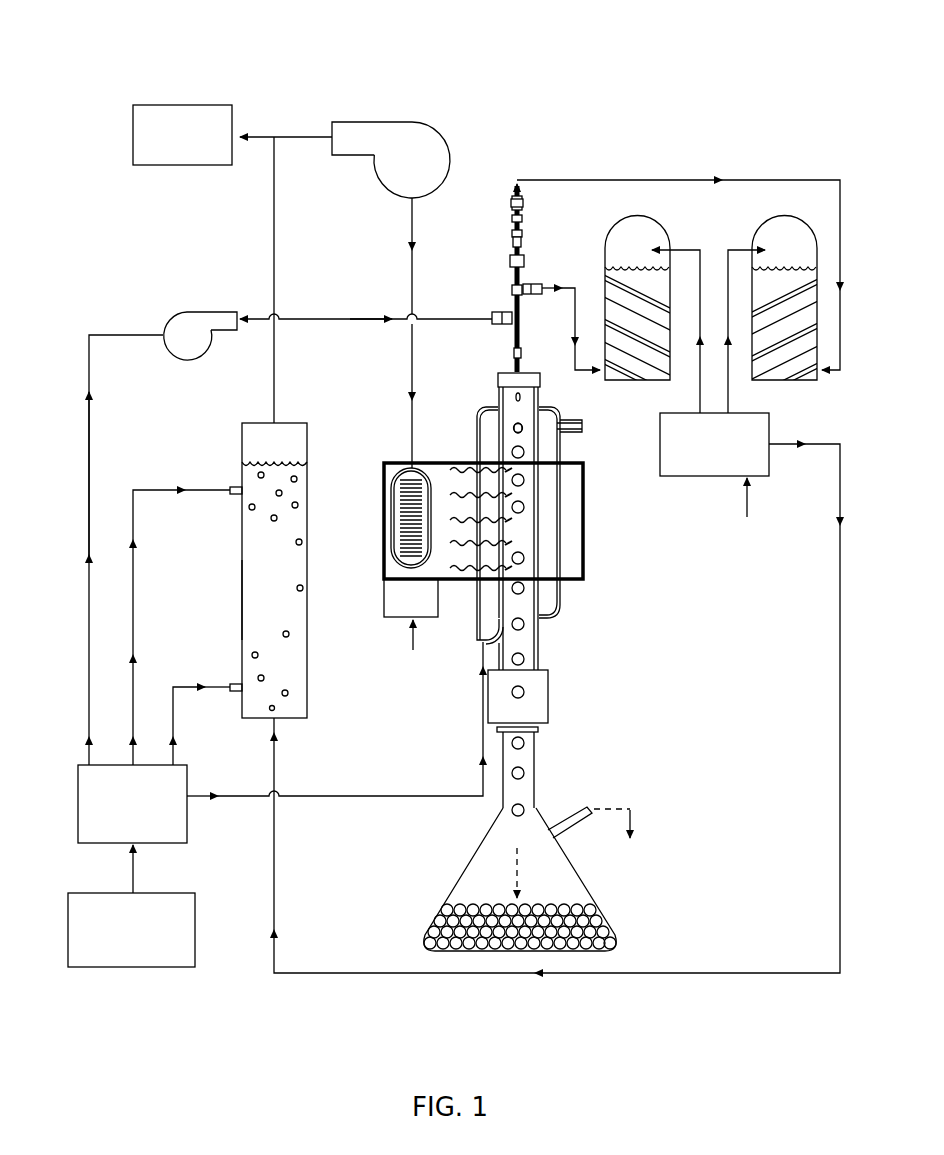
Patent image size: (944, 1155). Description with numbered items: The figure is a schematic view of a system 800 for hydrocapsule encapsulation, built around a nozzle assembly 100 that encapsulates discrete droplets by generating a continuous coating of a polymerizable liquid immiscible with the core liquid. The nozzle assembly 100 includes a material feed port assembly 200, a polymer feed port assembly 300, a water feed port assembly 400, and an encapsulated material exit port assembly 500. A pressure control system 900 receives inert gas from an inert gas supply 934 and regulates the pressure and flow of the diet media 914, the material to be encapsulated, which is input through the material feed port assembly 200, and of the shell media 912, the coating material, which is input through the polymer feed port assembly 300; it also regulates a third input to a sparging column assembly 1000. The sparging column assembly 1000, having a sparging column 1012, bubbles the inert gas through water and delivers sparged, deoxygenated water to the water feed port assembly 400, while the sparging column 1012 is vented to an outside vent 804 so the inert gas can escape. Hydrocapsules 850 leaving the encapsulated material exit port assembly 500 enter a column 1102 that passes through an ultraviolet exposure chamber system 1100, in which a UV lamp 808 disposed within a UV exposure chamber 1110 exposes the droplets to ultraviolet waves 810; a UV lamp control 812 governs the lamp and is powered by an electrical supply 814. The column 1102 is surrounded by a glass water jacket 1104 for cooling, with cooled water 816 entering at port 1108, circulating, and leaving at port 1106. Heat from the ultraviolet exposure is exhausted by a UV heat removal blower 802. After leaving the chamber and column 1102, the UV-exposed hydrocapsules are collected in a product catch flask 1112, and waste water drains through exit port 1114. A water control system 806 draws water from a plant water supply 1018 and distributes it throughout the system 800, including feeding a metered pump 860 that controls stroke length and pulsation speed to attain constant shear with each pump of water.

The system for hydrocapsule encapsulation 800 is at (311, 46).
The UV heat removal blower 802 is at (423, 122).
The outside vent 804 is at (168, 105).
The water control system 806 is at (86, 765).
The UV lamp 808 is at (402, 468).
The ultraviolet light waves 810 is at (467, 487).
The UV lamp control 812 is at (384, 597).
The electrical supply 814 is at (413, 643).
The cooled water 816 is at (418, 796).
The hydrocapsules 850 is at (521, 426).
The metered pump 860 is at (175, 313).
The pressure control system 900 is at (714, 444).
The shell media 912 is at (640, 312).
The diet media 914 is at (790, 312).
The inert gas supply 934 is at (746, 492).
The sparging column assembly 1000 is at (231, 463).
The sparging column 1012 is at (242, 595).
The plant water supply 1018 is at (114, 893).
The nozzle assembly 100 is at (502, 292).
The material feed port assembly 200 is at (524, 203).
The polymer feed port assembly 300 is at (541, 285).
The water feed port assembly 400 is at (494, 313).
The encapsulated material exit port assembly 500 is at (512, 371).
The ultraviolet exposure chamber system 1100 is at (569, 595).
The column 1102 is at (539, 636).
The water jacket 1104 is at (486, 406).
The exit port 1106 is at (583, 433).
The inlet port 1108 is at (481, 641).
The UV exposure chamber 1110 is at (584, 563).
The product catch flask 1112 is at (538, 806).
The exit port 1114 is at (612, 808).